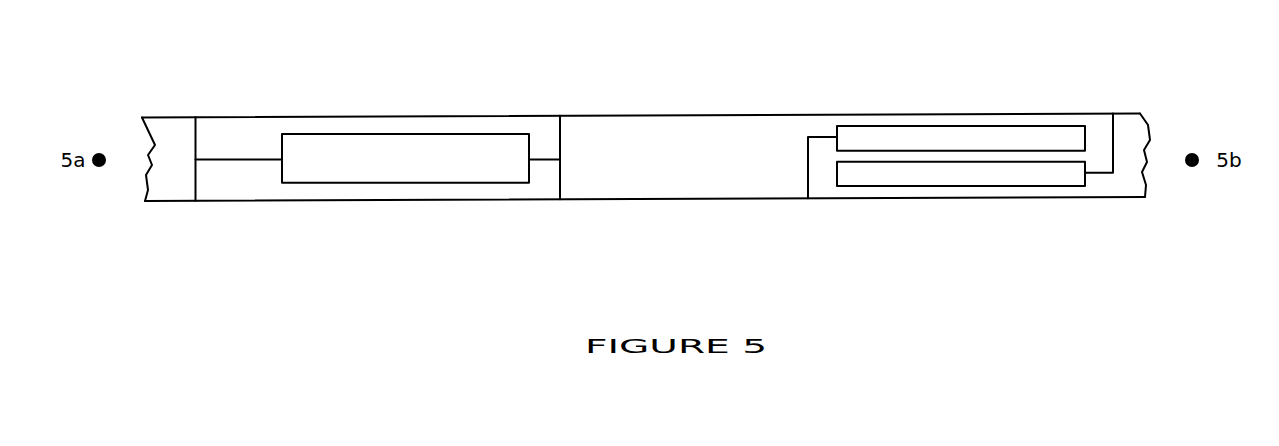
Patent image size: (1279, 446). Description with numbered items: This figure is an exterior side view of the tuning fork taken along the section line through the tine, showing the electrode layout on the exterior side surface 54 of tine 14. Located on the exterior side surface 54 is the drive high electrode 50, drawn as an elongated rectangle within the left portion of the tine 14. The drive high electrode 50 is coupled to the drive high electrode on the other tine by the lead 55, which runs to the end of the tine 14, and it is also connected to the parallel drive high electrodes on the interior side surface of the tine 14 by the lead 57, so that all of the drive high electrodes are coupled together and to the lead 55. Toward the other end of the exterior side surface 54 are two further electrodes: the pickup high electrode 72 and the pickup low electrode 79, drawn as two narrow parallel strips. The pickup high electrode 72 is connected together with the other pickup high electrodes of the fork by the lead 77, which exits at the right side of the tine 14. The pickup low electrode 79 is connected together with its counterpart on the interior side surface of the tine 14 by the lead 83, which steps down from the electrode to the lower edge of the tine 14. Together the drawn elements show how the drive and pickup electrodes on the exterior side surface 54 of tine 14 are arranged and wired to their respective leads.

The tine 14 is at (860, 199).
The drive high electrode 50 is at (338, 163).
The exterior side surface 54 is at (598, 169).
The lead 55 is at (194, 176).
The lead 57 is at (563, 138).
The pickup high electrode 72 is at (952, 173).
The lead 77 is at (1117, 135).
The pickup low electrode 79 is at (915, 137).
The lead 83 is at (805, 175).